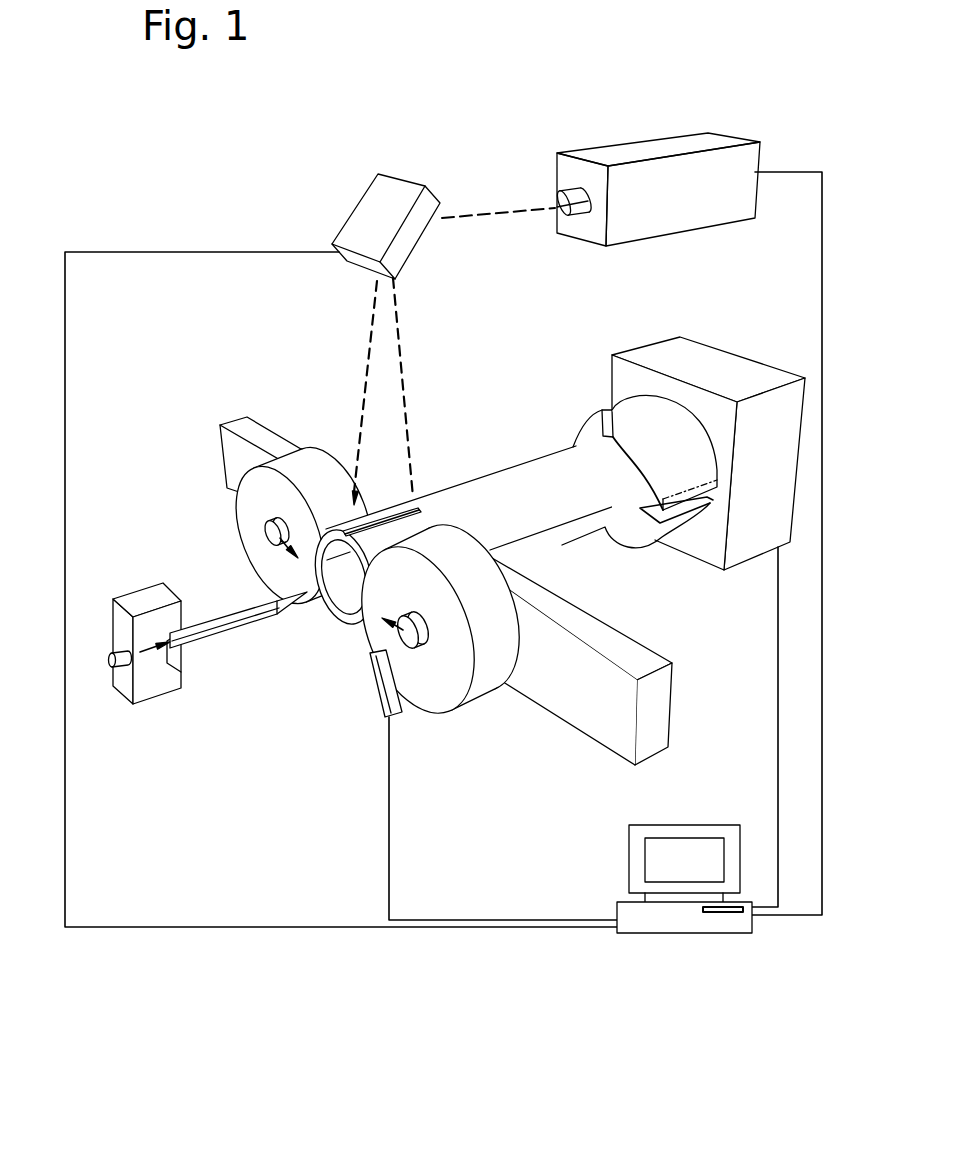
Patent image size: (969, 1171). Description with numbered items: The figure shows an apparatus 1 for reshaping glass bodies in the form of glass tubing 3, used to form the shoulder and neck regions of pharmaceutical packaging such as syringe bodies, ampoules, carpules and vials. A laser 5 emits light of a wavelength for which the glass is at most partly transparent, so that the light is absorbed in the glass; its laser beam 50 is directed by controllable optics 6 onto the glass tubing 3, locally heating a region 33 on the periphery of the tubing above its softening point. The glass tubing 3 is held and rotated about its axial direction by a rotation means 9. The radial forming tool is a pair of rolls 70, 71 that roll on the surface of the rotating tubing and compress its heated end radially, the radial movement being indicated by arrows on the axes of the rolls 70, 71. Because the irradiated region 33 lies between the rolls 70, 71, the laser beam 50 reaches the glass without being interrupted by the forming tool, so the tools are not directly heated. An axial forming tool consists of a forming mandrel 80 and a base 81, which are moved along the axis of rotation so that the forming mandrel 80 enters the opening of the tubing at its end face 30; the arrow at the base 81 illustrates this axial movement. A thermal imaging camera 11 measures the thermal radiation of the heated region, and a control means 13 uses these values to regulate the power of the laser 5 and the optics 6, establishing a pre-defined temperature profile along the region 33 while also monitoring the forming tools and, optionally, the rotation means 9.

The apparatus 1 is at (193, 193).
The glass tubing 3 is at (543, 463).
The laser 5 is at (658, 137).
The controllable optics 6 is at (340, 212).
The rotation means 9 is at (728, 590).
The thermal imaging camera 11 is at (388, 718).
The control means 13 is at (627, 933).
The end face 30 is at (347, 623).
The irradiated region 33 is at (382, 514).
The laser beam 50 is at (405, 355).
The roll 70 is at (473, 703).
The roll 71 is at (245, 512).
The forming mandrel 80 is at (221, 633).
The base 81 is at (152, 690).